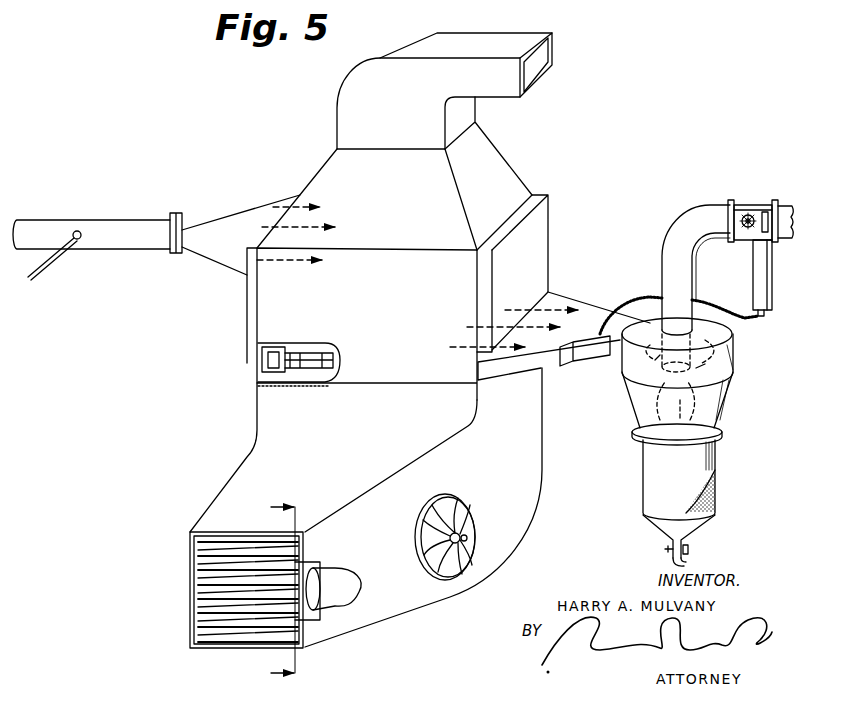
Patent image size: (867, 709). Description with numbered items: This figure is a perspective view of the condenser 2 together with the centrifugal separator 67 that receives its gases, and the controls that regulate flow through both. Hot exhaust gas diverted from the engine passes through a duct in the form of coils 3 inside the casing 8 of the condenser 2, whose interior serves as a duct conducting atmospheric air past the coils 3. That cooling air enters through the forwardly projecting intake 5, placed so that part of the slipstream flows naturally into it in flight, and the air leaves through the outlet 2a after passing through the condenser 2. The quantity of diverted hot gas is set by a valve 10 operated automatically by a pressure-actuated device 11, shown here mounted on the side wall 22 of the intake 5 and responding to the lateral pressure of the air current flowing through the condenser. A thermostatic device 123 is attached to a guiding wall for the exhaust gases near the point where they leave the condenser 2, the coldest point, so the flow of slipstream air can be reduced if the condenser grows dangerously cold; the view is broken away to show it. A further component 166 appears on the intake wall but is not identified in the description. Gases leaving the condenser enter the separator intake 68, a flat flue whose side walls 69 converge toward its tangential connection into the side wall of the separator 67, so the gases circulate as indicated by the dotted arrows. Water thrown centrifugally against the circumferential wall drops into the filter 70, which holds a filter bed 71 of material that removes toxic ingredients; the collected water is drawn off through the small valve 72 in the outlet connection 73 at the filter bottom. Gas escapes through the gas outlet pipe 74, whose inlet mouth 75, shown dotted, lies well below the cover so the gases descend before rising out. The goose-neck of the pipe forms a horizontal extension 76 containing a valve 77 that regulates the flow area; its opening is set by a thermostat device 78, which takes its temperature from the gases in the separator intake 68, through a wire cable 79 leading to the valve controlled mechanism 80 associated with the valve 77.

The condenser 2 is at (549, 224).
The outlet 2a is at (492, 86).
The coils 3 is at (283, 593).
The intake 5 is at (234, 488).
The casing 8 is at (266, 311).
The valve 10 is at (77, 243).
The pressure-actuated device 11 is at (458, 514).
The side wall 22 is at (425, 598).
The separator 67 is at (735, 347).
The separator intake 68 is at (590, 307).
The side walls 69 is at (545, 364).
The filter 70 is at (716, 465).
The filter bed 71 is at (718, 492).
The small valve 72 is at (690, 549).
The discharge outlet 73 is at (690, 565).
The gas outlet pipe 74 is at (683, 226).
The inlet mouth 75 is at (665, 372).
The horizontal extension 76 is at (790, 208).
The valve 77 is at (750, 201).
The thermostat device 78 is at (591, 357).
The wire cable 79 is at (718, 305).
The valve controlled mechanism 80 is at (764, 264).
The thermostatic device 123 is at (314, 366).
The fan motor 166 is at (333, 586).